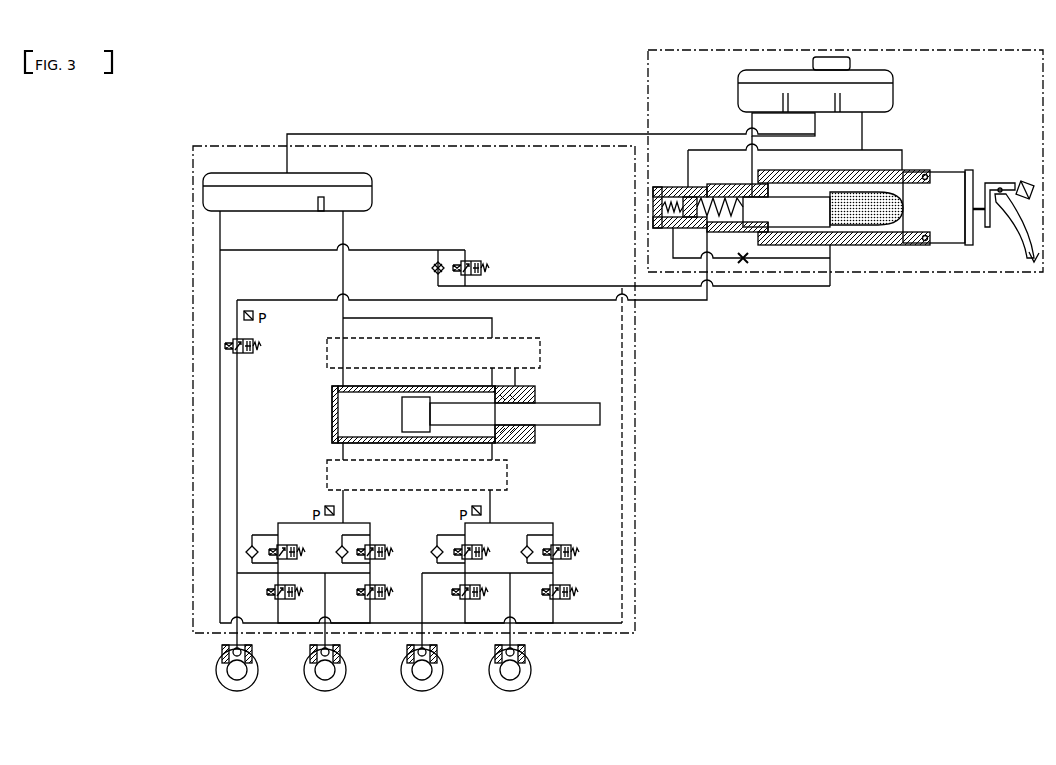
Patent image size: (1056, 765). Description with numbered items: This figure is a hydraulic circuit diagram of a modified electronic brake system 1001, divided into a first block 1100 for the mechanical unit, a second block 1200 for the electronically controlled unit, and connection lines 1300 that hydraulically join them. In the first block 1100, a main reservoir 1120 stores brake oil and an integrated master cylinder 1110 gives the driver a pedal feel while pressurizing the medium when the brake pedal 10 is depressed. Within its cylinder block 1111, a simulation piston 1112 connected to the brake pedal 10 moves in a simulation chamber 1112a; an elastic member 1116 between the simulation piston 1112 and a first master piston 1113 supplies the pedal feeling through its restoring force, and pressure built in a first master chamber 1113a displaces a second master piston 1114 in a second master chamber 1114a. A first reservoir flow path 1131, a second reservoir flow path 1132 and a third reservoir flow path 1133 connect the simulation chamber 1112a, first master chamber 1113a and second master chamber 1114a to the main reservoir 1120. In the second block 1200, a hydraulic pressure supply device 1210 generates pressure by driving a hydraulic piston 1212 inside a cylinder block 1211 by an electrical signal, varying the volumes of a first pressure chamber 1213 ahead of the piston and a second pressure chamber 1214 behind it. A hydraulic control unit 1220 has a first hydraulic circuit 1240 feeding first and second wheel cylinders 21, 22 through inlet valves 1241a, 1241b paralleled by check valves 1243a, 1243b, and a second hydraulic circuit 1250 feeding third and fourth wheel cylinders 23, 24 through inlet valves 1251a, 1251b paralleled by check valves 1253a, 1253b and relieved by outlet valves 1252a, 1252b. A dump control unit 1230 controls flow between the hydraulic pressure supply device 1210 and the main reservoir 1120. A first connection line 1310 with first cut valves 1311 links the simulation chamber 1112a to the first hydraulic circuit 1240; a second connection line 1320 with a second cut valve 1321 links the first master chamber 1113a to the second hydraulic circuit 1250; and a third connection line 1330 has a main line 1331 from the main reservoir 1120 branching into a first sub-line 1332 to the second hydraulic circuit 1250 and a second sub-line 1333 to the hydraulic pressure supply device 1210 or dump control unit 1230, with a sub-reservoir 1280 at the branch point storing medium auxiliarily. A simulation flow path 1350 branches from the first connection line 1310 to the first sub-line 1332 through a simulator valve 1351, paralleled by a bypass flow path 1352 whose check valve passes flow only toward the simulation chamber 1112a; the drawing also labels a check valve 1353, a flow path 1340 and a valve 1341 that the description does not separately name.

The electronic brake system 1001 is at (248, 81).
The brake pedal 10 is at (1012, 219).
The first wheel cylinder 21 is at (524, 652).
The second wheel cylinder 22 is at (436, 652).
The third wheel cylinder 23 is at (339, 652).
The fourth wheel cylinder 24 is at (251, 652).
The first block 1100 is at (648, 91).
The integrated master cylinder 1110 is at (817, 196).
The cylinder block 1111 is at (836, 246).
The simulation piston 1112 is at (940, 232).
The simulation chamber 1112a is at (868, 241).
The first master piston 1113 is at (797, 196).
The first master chamber 1113a is at (729, 196).
The second master piston 1114 is at (692, 218).
The second master chamber 1114a is at (672, 187).
The elastic member 1116 is at (847, 192).
The main reservoir 1120 is at (893, 85).
The first reservoir flow path 1131 is at (885, 149).
The second reservoir flow path 1132 is at (751, 128).
The third reservoir flow path 1133 is at (692, 161).
The second block 1200 is at (636, 431).
The hydraulic pressure supply device 1210 is at (429, 415).
The cylinder block 1211 is at (334, 425).
The hydraulic piston 1212 is at (426, 397).
The first pressure chamber 1213 is at (381, 389).
The second pressure chamber 1214 is at (461, 432).
The hydraulic control unit 1220 is at (508, 473).
The dump control unit 1230 is at (540, 353).
The first hydraulic circuit 1240 is at (556, 519).
The first inlet valve 1241a is at (576, 539).
The second inlet valve 1241b is at (482, 539).
The first check valve 1243a is at (524, 558).
The second check valve 1243b is at (437, 545).
The second hydraulic circuit 1250 is at (278, 518).
The third inlet valve 1251a is at (391, 539).
The fourth inlet valve 1251b is at (297, 539).
The first outlet valve 1252a is at (390, 603).
The second outlet valve 1252b is at (300, 603).
The third check valve 1253a is at (340, 558).
The fourth check valve 1253b is at (253, 545).
The sub-reservoir 1280 is at (372, 190).
The connection line 1300 is at (966, 371).
The first connection line 1310 is at (803, 287).
The first cut valve 1311 is at (486, 603).
The second connection line 1320 is at (673, 301).
The second cut valve 1321 is at (247, 354).
The third connection line 1330 is at (966, 390).
The main line 1331 is at (287, 160).
The first sub-line 1332 is at (220, 231).
The second sub-line 1333 is at (343, 231).
The simulator flow path 1340 is at (722, 260).
The simulator valve 1341 is at (748, 264).
The simulation flow path 1350 is at (530, 285).
The simulator valve 1351 is at (473, 261).
The bypass flow path 1352 is at (438, 285).
The check valve 1353 is at (432, 268).